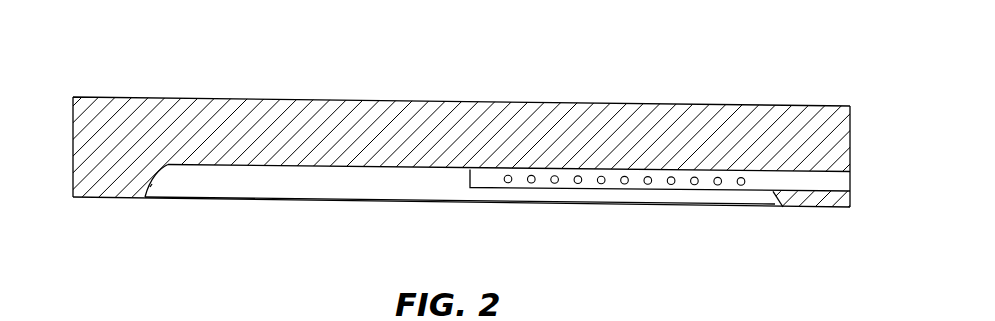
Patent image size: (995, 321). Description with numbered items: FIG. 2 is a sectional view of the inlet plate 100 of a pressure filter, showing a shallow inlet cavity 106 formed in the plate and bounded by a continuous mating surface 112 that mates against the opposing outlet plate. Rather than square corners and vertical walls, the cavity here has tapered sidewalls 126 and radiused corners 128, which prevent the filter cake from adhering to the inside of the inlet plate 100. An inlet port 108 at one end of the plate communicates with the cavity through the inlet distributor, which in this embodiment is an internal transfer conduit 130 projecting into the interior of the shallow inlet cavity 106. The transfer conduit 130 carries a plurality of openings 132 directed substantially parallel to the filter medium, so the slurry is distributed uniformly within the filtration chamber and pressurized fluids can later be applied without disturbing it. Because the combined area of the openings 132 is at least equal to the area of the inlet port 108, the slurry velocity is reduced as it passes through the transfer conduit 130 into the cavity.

The inlet plate 100 is at (240, 99).
The shallow inlet cavity 106 is at (313, 169).
The inlet port 108 is at (851, 182).
The continuous mating surface 112 is at (117, 198).
The tapered sidewalls 126 is at (170, 167).
The radiused corners 128 is at (150, 187).
The internal transfer conduit 130 is at (635, 182).
The openings 132 is at (555, 183).